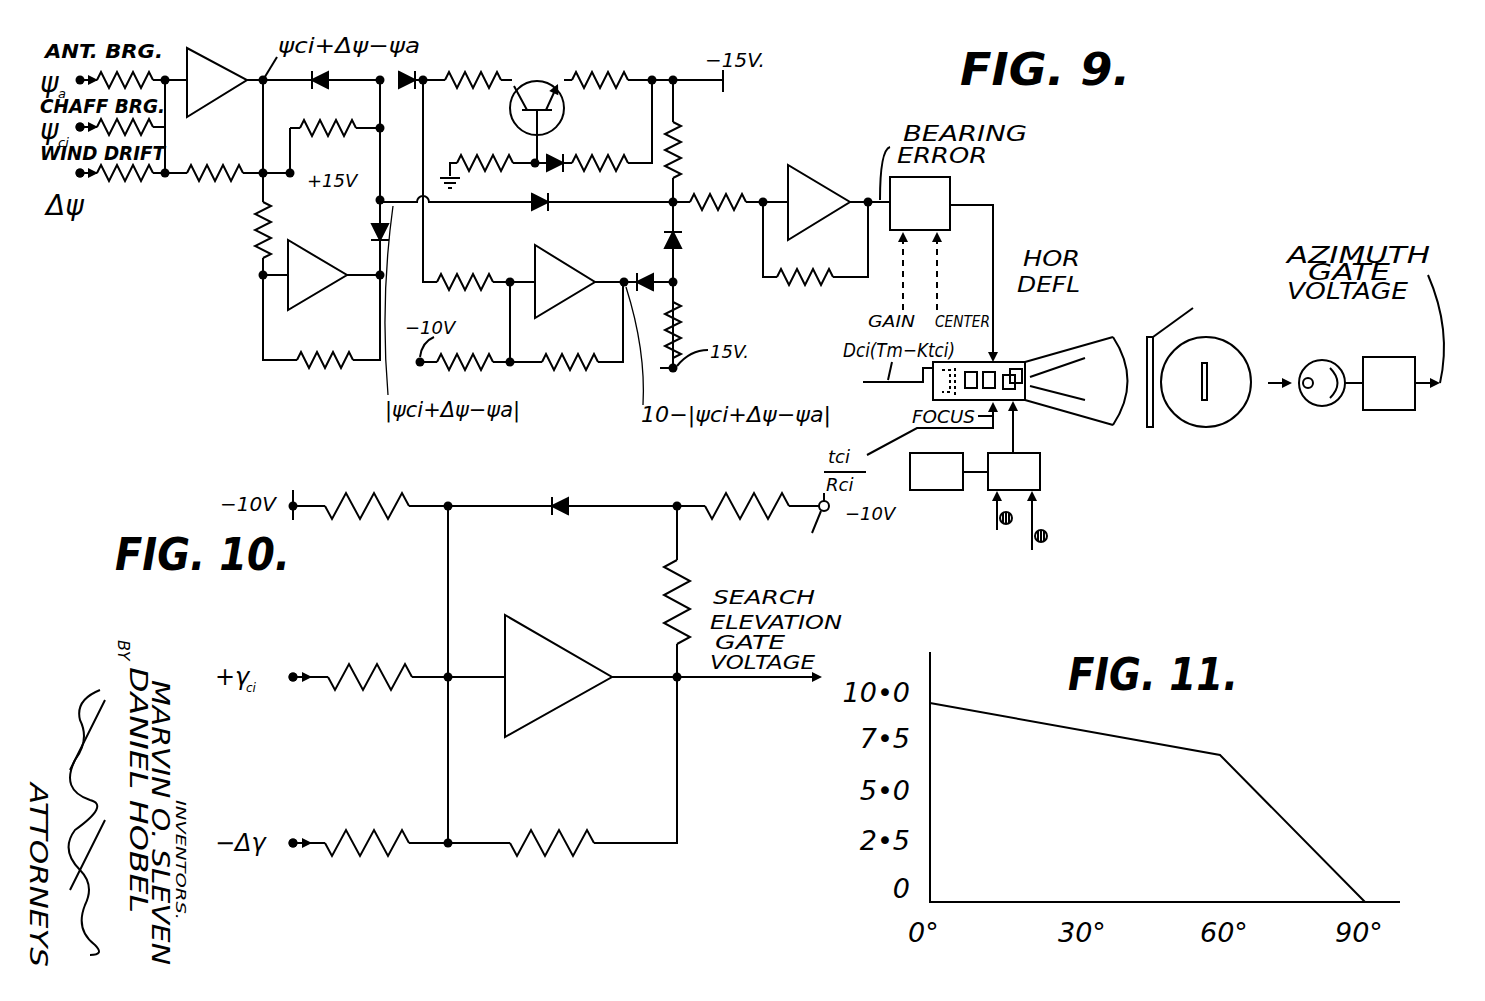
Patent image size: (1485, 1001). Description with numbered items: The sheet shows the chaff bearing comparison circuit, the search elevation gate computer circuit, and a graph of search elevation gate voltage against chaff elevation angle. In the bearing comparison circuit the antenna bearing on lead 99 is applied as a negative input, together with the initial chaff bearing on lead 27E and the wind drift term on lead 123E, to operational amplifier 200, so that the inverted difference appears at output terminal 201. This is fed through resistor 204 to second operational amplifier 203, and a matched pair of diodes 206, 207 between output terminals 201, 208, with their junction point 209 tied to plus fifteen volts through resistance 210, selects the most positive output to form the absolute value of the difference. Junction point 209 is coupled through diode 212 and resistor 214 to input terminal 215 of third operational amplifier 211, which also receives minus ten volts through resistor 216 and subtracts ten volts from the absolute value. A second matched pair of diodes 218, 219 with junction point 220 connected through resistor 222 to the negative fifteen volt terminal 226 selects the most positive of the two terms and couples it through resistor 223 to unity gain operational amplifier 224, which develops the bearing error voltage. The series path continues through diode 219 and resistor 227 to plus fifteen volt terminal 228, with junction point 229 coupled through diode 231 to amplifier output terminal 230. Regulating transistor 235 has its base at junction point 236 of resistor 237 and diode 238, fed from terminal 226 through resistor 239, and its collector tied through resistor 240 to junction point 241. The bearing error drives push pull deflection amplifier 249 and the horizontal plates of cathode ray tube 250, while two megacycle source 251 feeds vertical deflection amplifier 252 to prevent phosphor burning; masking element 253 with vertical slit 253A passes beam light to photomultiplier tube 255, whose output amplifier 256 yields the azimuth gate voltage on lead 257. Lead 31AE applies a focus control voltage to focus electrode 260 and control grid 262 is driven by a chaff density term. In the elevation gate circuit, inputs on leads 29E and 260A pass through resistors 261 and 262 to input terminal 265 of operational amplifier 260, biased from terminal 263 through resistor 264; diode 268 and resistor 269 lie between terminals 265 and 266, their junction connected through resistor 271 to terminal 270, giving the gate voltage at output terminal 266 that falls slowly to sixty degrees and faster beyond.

In FIG. 9, the lead 99 is at (92, 78).
In FIG. 9, the lead 27E is at (84, 131).
In FIG. 9, the lead 123E is at (80, 178).
In FIG. 9, the operational amplifier 200 is at (222, 43).
In FIG. 9, the output terminal 201 is at (263, 80).
In FIG. 9, the second operational amplifier 203 is at (313, 307).
In FIG. 9, the resistor 204 is at (256, 250).
In FIG. 9, the diode 206 is at (325, 86).
In FIG. 9, the diode 207 is at (371, 229).
In FIG. 9, the output terminal 208 is at (370, 275).
In FIG. 9, the junction point 209 is at (383, 197).
In FIG. 9, the resistance 210 is at (293, 170).
In FIG. 9, the third operational amplifier 211 is at (577, 307).
In FIG. 9, the diode 212 is at (407, 88).
In FIG. 9, the resistor 214 is at (463, 276).
In FIG. 9, the input terminal 215 is at (510, 278).
In FIG. 9, the resistor 216 is at (490, 355).
In FIG. 9, the diode 218 is at (546, 208).
In FIG. 9, the diode 219 is at (680, 236).
In FIG. 9, the junction point 220 is at (677, 199).
In FIG. 9, the resistor 222 is at (681, 150).
In FIG. 9, the resistor 223 is at (727, 208).
In FIG. 9, the unity gain operational amplifier 224 is at (829, 187).
In FIG. 9, the negative 15 volt terminal 226 is at (725, 83).
In FIG. 9, the resistor 227 is at (683, 335).
In FIG. 9, the plus 15 volt terminal 228 is at (675, 371).
In FIG. 9, the junction point 229 is at (678, 284).
In FIG. 9, the amplifier output terminal 230 is at (622, 278).
In FIG. 9, the diode 231 is at (655, 258).
In FIG. 9, the regulating transistor 235 is at (548, 85).
In FIG. 9, the junction point 236 is at (539, 167).
In FIG. 9, the resistor 237 is at (488, 179).
In FIG. 9, the diode 238 is at (560, 156).
In FIG. 9, the resistor 239 is at (618, 170).
In FIG. 9, the resistor 240 is at (510, 85).
In FIG. 9, the junction point 241 is at (433, 75).
In FIG. 9, the push pull deflection amplifier 249 is at (950, 190).
In FIG. 9, the cathode ray tube 250 is at (1068, 348).
In FIG. 9, the source 251 is at (938, 490).
In FIG. 9, the vertical deflection amplifier 252 is at (1040, 472).
In FIG. 9, the masking element 253 is at (1197, 345).
In FIG. 9, the vertical slit 253A is at (1207, 400).
In FIG. 9, the photomultiplier tube 255 is at (1322, 360).
In FIG. 9, the amplifier 256 is at (1393, 357).
In FIG. 9, the lead 257 is at (1434, 390).
In FIG. 9, the focus electrode / operational amplifier 260 is at (945, 430).
In FIG. 10, the focus electrode / operational amplifier 260 is at (580, 692).
In FIG. 9, the control grid / resistor 262 is at (903, 384).
In FIG. 10, the control grid / resistor 262 is at (389, 850).
In FIG. 9, the lead 31AE is at (912, 419).
In FIG. 10, the lead 29E is at (292, 673).
In FIG. 10, the lead 260A is at (295, 848).
In FIG. 10, the resistor 261 is at (356, 686).
In FIG. 10, the terminal 263 is at (296, 503).
In FIG. 10, the resistor 264 is at (392, 498).
In FIG. 10, the input terminal 265 is at (446, 673).
In FIG. 10, the output terminal 266 is at (683, 683).
In FIG. 10, the diode 268 is at (568, 499).
In FIG. 10, the resistor 269 is at (690, 566).
In FIG. 10, the terminal 270 is at (820, 526).
In FIG. 10, the resistor 271 is at (757, 484).